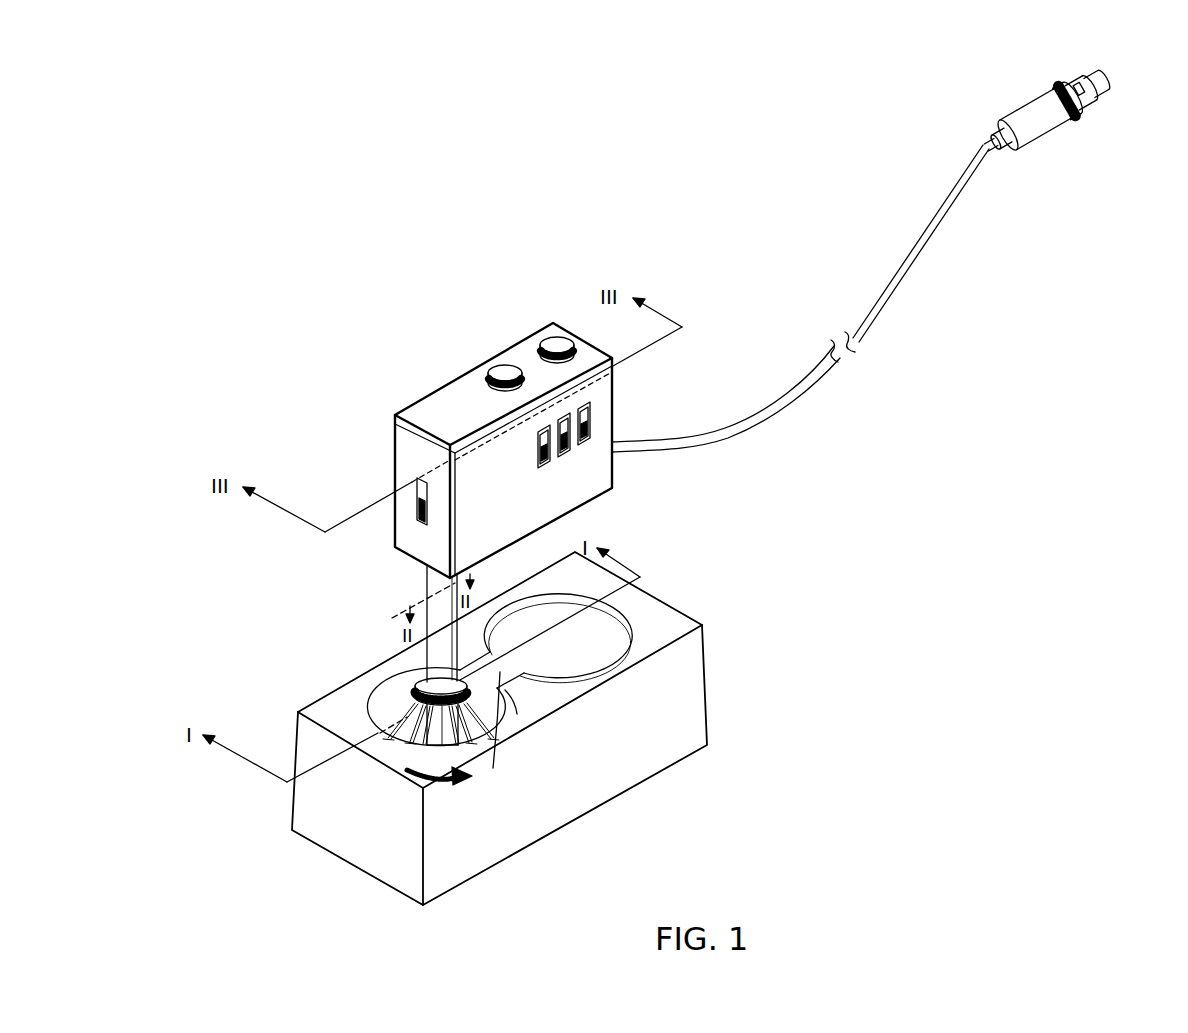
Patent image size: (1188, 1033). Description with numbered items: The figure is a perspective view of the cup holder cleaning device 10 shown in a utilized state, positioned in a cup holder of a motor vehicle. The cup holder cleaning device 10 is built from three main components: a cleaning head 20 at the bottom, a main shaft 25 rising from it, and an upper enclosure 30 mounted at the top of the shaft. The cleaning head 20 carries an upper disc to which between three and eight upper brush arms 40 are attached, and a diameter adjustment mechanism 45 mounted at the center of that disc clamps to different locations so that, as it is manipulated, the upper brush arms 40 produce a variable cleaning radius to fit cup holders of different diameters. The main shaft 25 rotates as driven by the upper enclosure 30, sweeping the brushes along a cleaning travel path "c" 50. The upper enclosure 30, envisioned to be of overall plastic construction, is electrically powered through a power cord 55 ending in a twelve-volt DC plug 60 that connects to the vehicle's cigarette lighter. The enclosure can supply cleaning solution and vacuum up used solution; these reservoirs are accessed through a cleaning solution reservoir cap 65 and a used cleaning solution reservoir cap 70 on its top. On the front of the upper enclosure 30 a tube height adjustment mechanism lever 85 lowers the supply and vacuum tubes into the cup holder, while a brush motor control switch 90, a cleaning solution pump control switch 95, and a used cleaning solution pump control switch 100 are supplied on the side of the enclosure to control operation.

The cup holder cleaning device 10 is at (346, 191).
The cleaning head 20 is at (490, 697).
The main shaft 25 is at (425, 585).
The upper enclosure 30 is at (537, 335).
The upper brush arms 40 is at (405, 713).
The diameter adjustment mechanism 45 is at (470, 690).
The cleaning travel path "c" 50 is at (442, 782).
The power cord 55 is at (792, 400).
The 12-VDC plug 60 is at (1040, 118).
The cleaning solution reservoir cap 65 is at (505, 373).
The used cleaning solution reservoir cap 70 is at (557, 345).
The tube height adjustment mechanism lever 85 is at (420, 502).
The brush motor control switch 90 is at (550, 463).
The cleaning solution pump control switch 95 is at (570, 452).
The used cleaning solution pump control switch 100 is at (590, 440).